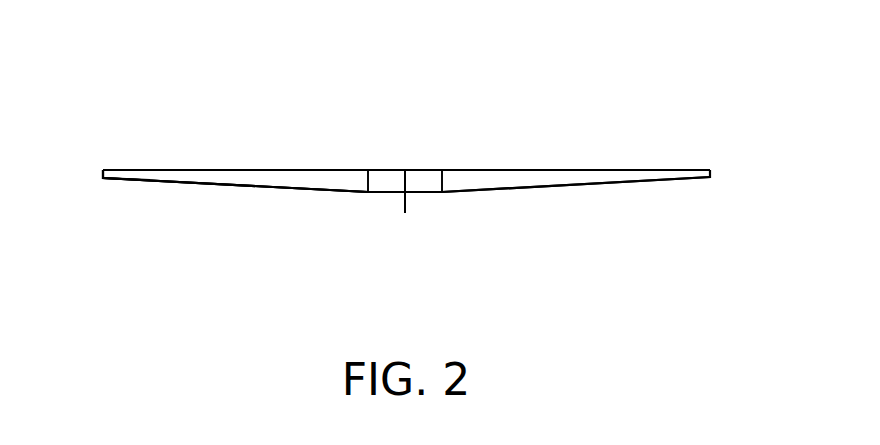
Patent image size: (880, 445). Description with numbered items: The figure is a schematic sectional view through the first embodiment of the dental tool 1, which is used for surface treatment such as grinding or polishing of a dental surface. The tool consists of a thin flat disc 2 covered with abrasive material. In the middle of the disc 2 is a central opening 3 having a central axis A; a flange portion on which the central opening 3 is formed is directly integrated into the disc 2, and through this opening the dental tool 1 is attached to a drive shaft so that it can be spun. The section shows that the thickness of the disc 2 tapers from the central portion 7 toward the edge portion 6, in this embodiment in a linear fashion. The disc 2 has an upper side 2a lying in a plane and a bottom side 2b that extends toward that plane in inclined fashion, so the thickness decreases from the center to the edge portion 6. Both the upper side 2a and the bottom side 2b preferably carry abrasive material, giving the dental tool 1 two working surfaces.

The dental tool 1 is at (242, 128).
The disc 2 is at (584, 176).
The upper side 2a is at (190, 169).
The bottom side 2b is at (222, 184).
The central opening 3 is at (428, 169).
The edge portion 6 is at (107, 169).
The central portion 7 is at (317, 169).
The central axis A is at (404, 170).